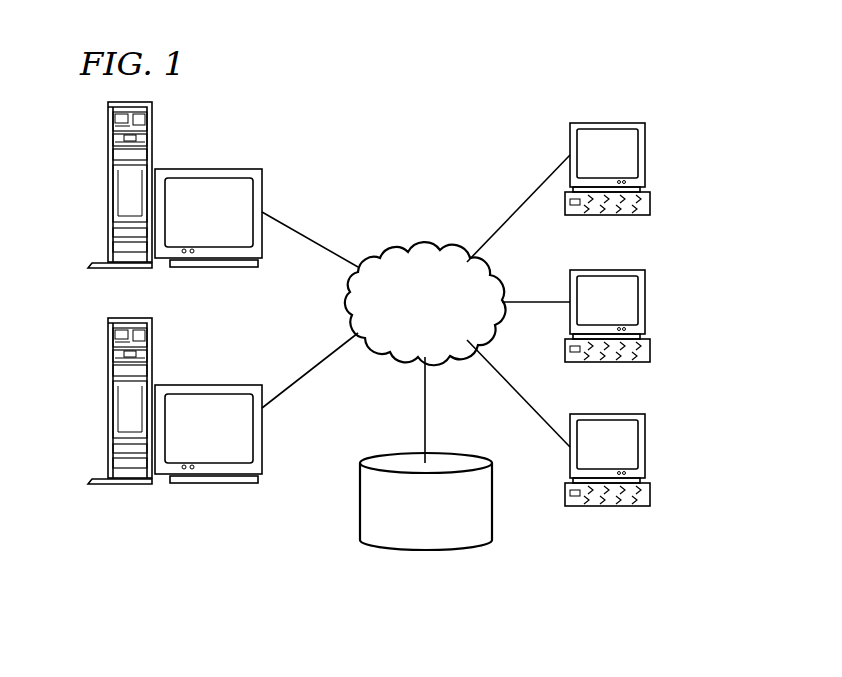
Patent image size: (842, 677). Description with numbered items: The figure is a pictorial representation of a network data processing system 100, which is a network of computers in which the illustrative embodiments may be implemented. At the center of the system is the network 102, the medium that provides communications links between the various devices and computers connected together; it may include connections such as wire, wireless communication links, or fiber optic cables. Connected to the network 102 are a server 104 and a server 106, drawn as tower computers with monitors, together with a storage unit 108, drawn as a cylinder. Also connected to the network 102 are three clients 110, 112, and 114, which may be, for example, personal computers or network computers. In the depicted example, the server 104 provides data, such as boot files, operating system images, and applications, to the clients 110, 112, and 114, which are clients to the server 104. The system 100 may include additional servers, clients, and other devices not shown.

The network data processing system 100 is at (474, 134).
The network 102 is at (395, 251).
The server 104 is at (108, 185).
The server 106 is at (108, 404).
The storage unit 108 is at (407, 550).
The client 110 is at (647, 153).
The client 112 is at (647, 302).
The client 114 is at (647, 445).